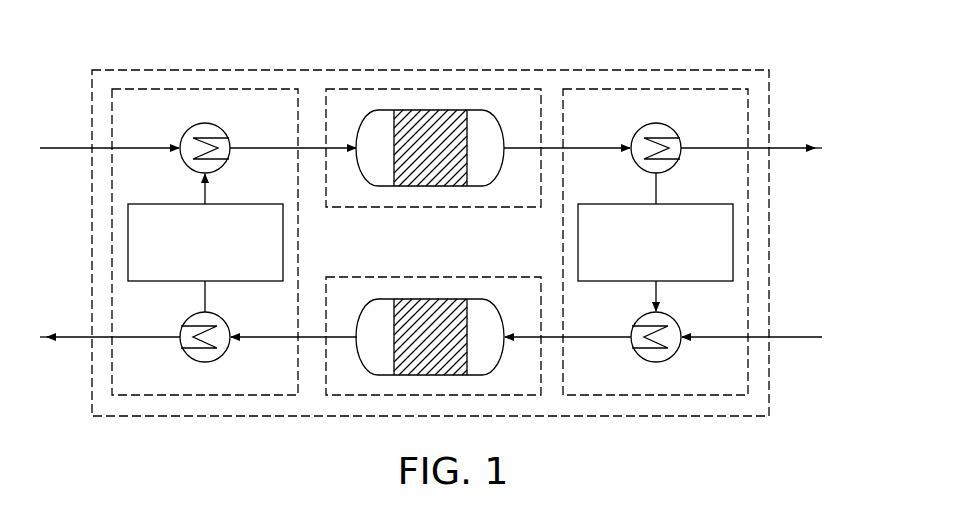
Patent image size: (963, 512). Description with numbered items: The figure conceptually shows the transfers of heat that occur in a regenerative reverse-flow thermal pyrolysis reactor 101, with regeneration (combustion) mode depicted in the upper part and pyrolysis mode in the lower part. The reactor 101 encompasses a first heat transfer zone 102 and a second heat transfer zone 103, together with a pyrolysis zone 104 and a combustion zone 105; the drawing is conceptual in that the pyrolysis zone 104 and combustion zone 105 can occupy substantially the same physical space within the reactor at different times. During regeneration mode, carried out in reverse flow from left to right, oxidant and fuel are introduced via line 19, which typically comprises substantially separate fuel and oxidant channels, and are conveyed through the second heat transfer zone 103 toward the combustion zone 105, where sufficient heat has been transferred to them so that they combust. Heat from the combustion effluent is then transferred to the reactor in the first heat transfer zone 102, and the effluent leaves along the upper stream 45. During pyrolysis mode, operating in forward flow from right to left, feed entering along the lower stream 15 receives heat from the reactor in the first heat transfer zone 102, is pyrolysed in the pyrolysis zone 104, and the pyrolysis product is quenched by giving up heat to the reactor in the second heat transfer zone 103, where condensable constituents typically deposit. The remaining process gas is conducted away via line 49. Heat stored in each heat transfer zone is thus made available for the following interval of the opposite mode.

The regenerative reverse-flow thermal pyrolysis reactor 101 is at (593, 70).
The first heat transfer zone 102 is at (718, 396).
The second heat transfer zone 103 is at (232, 89).
The pyrolysis zone 104 is at (372, 396).
The combustion zone 105 is at (410, 89).
The line 19 is at (70, 147).
The first product stream 45 is at (782, 147).
The second feed stream 15 is at (782, 336).
The line 49 is at (80, 340).